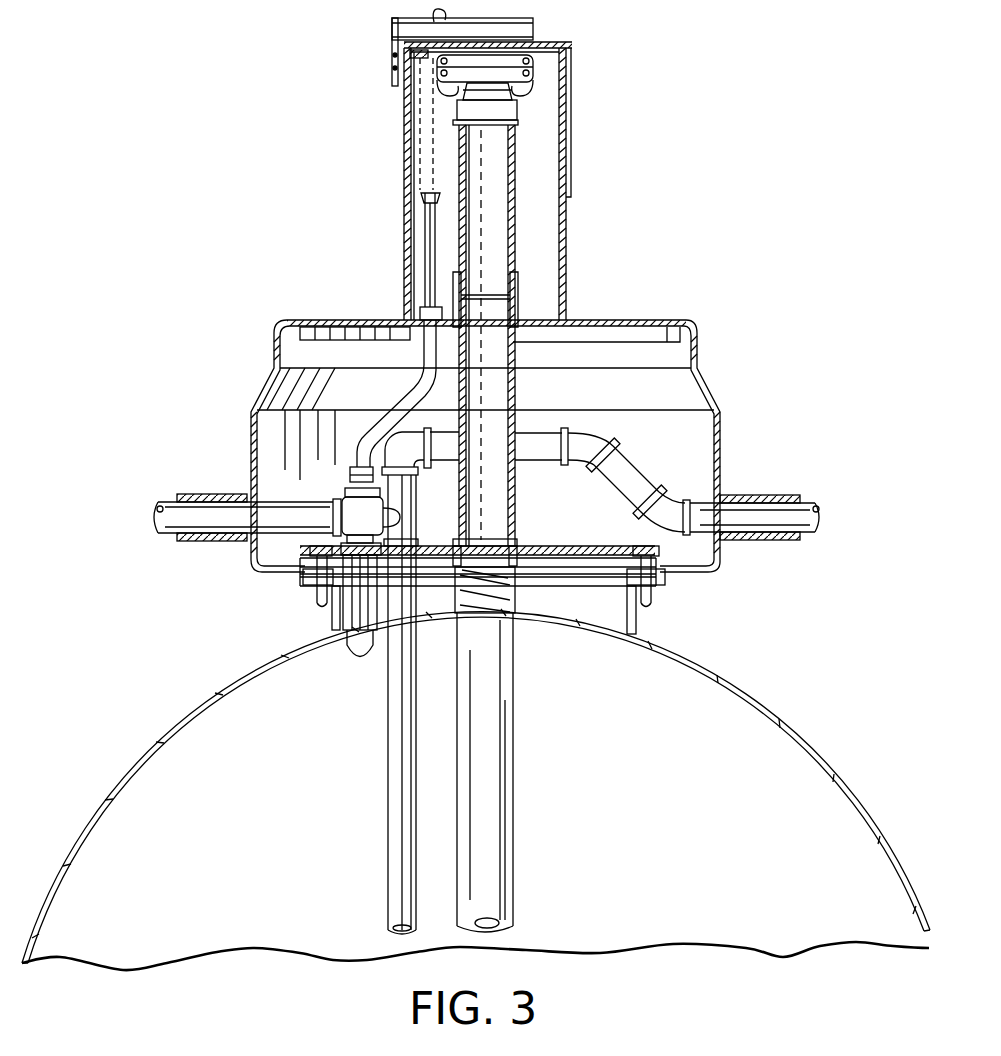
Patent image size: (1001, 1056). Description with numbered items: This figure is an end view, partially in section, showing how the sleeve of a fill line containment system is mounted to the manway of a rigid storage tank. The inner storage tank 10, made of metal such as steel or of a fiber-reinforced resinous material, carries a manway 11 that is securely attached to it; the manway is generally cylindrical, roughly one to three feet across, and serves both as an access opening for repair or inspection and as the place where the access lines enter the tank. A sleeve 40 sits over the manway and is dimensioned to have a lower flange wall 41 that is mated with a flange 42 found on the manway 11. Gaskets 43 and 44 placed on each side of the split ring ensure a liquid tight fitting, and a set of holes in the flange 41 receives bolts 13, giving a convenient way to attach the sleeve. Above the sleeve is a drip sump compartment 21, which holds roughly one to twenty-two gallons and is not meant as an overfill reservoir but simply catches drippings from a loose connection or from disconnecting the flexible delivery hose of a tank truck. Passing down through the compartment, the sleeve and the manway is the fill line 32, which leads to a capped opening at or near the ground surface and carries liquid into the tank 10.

The inner storage tank 10 is at (858, 792).
The manway 11 is at (638, 618).
The bolts 13 is at (640, 548).
The drip sump compartment 21 is at (573, 214).
The fill line 32 is at (524, 247).
The sleeve 40 is at (723, 437).
The lower flange wall 41 is at (700, 578).
The flange 42 is at (305, 583).
The gasket 43 is at (693, 581).
The gasket 44 is at (662, 584).